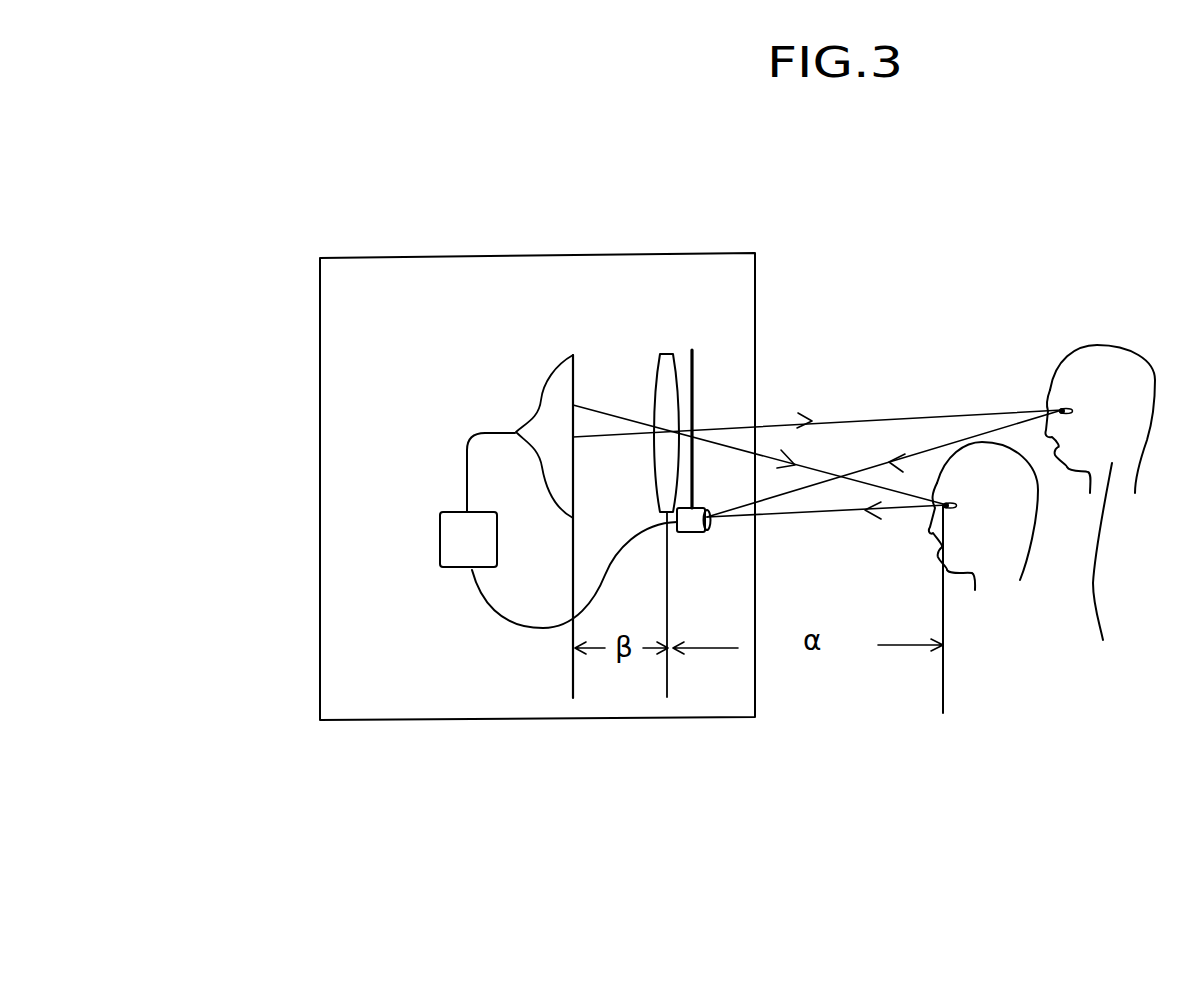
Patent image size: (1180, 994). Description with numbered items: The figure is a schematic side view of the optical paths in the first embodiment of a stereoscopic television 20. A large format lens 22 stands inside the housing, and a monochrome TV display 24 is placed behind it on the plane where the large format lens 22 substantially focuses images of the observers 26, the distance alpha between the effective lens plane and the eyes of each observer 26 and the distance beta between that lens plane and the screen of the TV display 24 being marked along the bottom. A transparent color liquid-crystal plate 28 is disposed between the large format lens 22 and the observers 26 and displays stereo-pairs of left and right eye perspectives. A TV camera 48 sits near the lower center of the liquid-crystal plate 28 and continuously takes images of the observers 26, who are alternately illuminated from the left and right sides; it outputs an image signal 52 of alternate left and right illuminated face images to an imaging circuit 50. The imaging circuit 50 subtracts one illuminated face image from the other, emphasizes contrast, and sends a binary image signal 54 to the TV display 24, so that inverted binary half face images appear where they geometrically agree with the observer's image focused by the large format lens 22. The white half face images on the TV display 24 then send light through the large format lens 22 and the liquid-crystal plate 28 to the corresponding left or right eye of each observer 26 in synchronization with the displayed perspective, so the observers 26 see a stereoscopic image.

The stereoscopic television 20 is at (758, 251).
The large format lens 22 is at (666, 360).
The monochrome TV display 24 is at (562, 377).
The observer 26 is at (1005, 552).
The transparent color liquid-crystal plate 28 is at (692, 347).
The TV camera 48 is at (697, 532).
The imaging circuit 50 is at (448, 544).
The image signal 52 is at (477, 593).
The binary image signal 54 is at (462, 472).